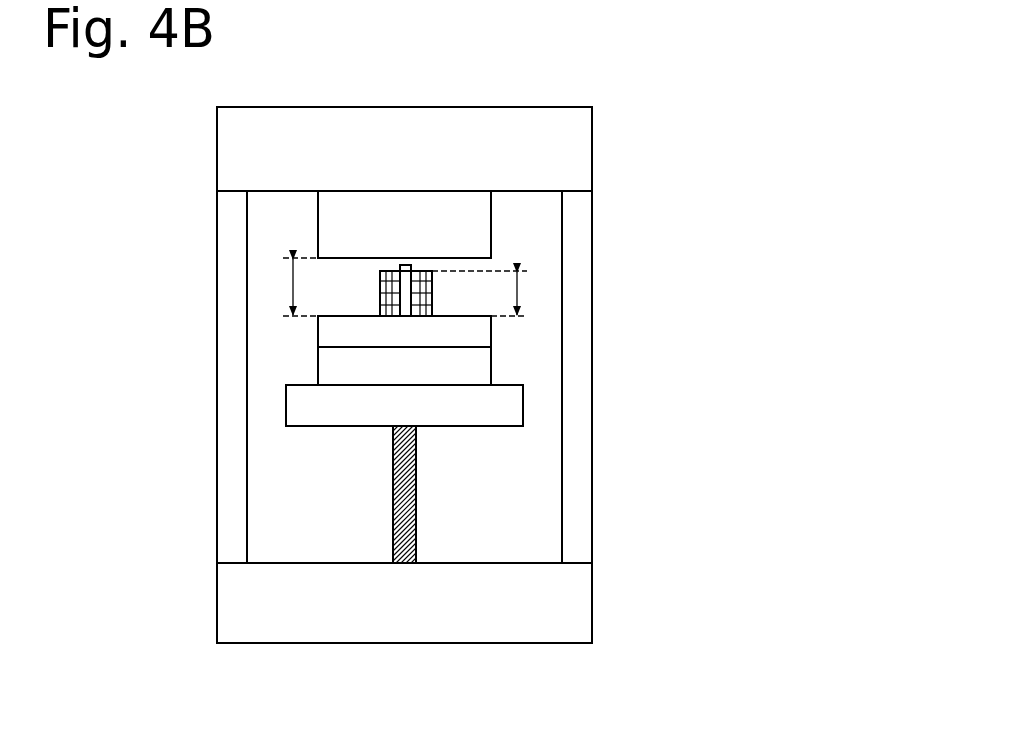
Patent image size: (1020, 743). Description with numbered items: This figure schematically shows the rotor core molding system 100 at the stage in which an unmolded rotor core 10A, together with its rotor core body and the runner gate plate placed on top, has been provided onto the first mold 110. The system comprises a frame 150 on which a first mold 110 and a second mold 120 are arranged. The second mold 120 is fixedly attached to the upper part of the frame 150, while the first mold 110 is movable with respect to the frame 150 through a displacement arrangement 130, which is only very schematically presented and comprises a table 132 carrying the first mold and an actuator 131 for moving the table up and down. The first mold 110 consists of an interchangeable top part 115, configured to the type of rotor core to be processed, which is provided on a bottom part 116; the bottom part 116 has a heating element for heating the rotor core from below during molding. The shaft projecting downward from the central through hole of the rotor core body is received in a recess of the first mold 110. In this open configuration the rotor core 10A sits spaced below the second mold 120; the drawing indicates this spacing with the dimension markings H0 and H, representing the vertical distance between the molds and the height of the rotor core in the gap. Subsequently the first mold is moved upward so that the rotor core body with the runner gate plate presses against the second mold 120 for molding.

The rotor core molding system 100 is at (146, 251).
The frame 150 is at (582, 215).
The second mold 120 is at (472, 203).
The unmolded rotor core 10A is at (448, 283).
The first mold 110 is at (492, 360).
The top part of the first mold 115 is at (323, 332).
The bottom part of the first mold 116 is at (320, 370).
The table 132 is at (303, 410).
The actuator 131 is at (402, 497).
The displacement arrangement 130 is at (510, 452).
The initial gap height H0 is at (292, 287).
The gap height H is at (517, 293).